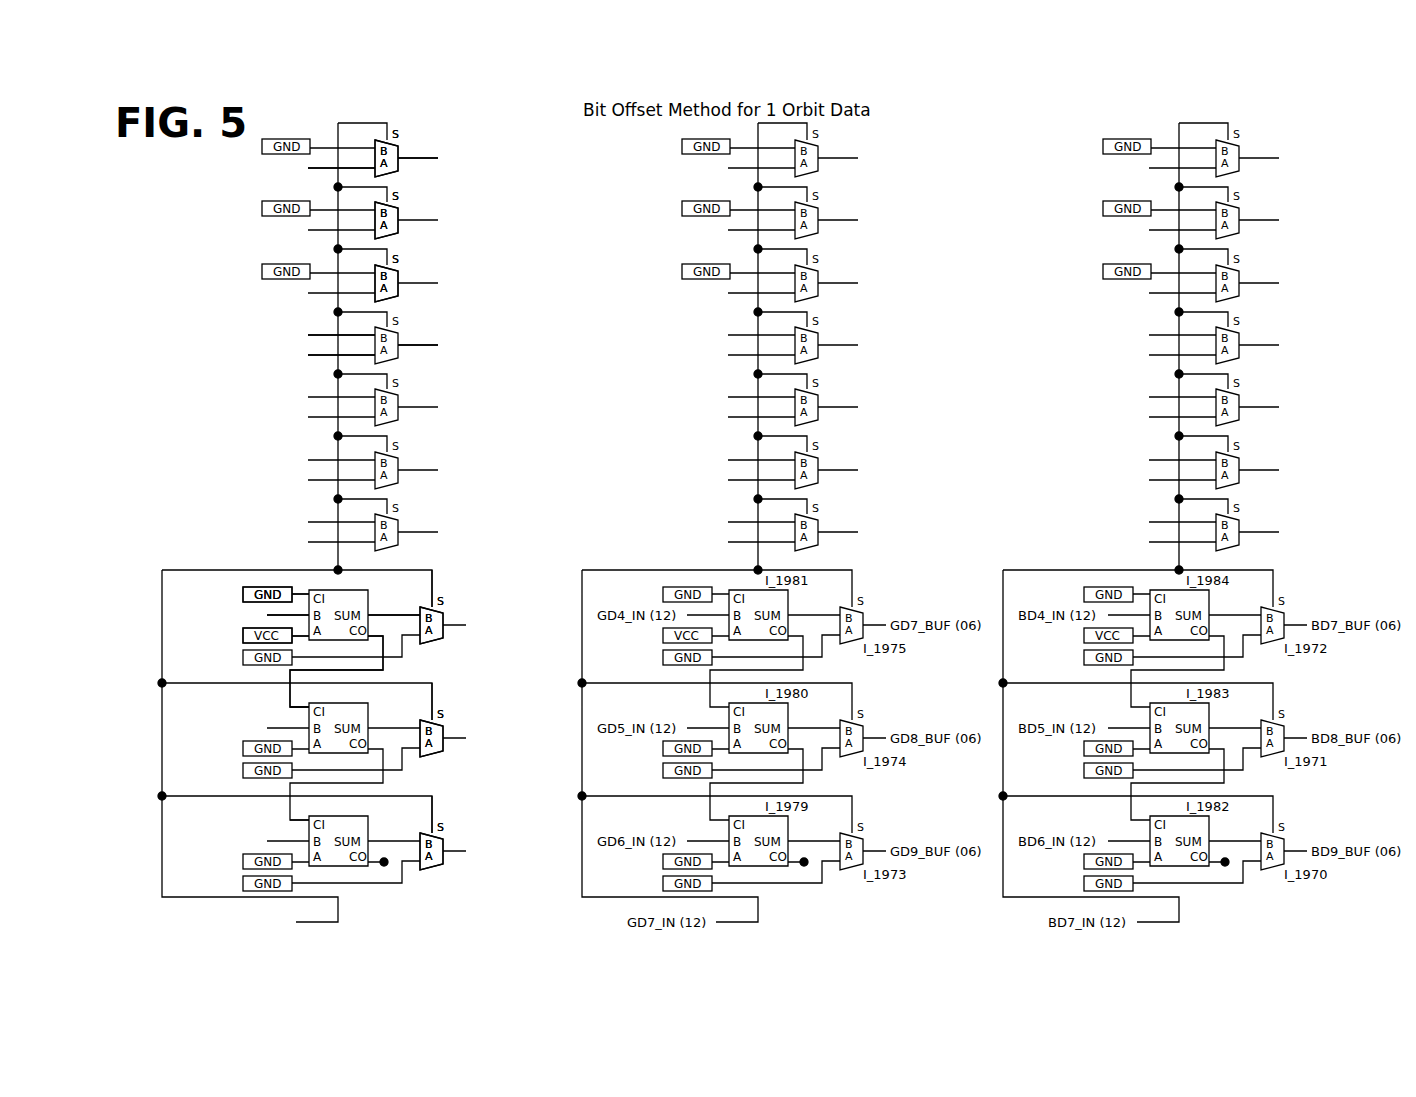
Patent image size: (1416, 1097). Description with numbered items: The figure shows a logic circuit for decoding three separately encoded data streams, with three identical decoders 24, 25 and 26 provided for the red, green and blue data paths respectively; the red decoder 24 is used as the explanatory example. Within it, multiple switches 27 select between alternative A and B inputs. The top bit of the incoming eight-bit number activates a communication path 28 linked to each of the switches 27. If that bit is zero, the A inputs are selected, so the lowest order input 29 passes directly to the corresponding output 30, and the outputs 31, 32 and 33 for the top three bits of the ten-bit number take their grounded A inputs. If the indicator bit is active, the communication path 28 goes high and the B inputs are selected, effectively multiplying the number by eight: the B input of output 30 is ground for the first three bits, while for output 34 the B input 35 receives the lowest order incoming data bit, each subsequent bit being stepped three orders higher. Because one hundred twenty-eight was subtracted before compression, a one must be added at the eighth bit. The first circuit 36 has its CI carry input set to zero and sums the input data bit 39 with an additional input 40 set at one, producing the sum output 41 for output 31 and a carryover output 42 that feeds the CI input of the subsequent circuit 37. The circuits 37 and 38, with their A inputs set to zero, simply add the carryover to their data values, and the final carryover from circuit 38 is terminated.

The decoder 24 is at (418, 123).
The decoder 25 is at (796, 346).
The decoder 26 is at (1216, 341).
The switch 27 is at (400, 150).
The communication path 28 is at (162, 828).
The input 29 is at (182, 162).
The output 30 is at (527, 157).
The output 31 is at (532, 606).
The output 32 is at (532, 719).
The output 33 is at (532, 833).
The output 34 is at (560, 331).
The B input 35 is at (182, 330).
The circuit 36 is at (333, 597).
The circuit 37 is at (333, 707).
The circuit 38 is at (337, 820).
The input data bit 39 is at (190, 612).
The additional input 40 is at (243, 633).
The output bit 41 is at (390, 605).
The output bit 42 is at (385, 650).